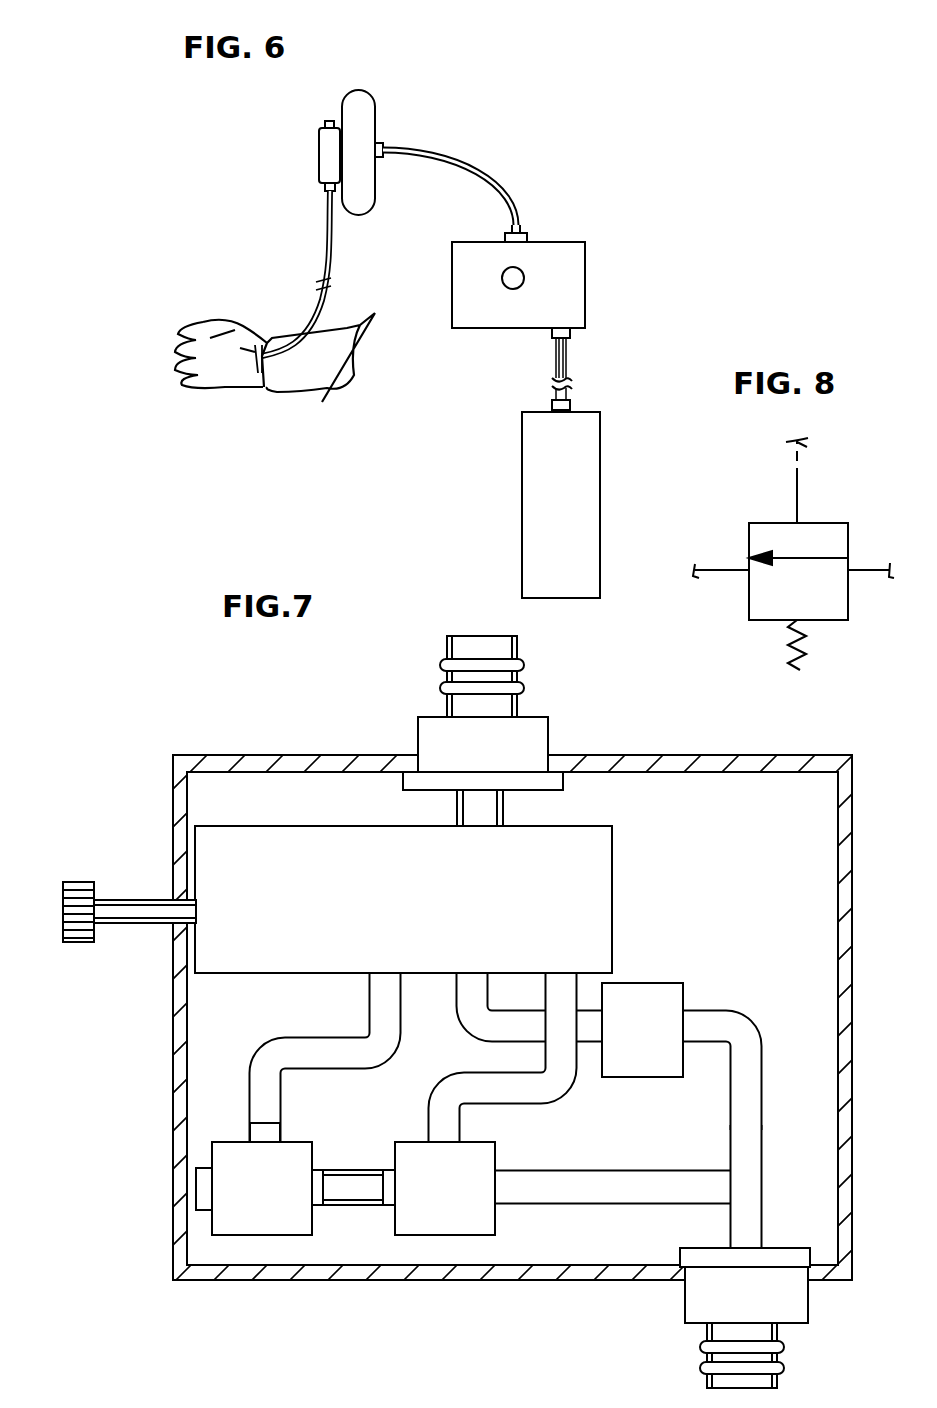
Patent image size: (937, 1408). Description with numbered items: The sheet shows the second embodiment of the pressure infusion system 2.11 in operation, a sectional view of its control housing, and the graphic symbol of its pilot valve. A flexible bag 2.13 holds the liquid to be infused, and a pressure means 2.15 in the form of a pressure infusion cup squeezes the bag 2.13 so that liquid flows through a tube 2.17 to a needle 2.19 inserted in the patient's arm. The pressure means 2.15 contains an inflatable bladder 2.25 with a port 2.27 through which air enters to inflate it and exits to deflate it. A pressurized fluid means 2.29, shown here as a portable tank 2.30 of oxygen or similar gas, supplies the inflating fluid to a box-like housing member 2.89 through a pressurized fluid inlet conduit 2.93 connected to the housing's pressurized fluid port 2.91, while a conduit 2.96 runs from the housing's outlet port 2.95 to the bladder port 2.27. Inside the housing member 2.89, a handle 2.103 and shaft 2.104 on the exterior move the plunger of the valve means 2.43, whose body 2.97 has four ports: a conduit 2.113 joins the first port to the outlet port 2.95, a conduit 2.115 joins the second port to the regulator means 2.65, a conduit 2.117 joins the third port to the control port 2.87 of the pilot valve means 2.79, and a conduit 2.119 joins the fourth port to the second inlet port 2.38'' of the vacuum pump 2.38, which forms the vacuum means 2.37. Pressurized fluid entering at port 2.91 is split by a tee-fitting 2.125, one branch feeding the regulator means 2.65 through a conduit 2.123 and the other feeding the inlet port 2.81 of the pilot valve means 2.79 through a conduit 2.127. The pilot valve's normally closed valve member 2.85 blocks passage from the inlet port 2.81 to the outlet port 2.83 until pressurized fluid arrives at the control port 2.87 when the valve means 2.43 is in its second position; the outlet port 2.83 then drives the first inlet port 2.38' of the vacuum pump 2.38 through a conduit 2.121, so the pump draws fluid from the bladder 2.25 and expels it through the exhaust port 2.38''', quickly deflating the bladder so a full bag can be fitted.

In FIG. 6, the pressure infusion system 2.11 is at (398, 425).
In FIG. 6, the flexible bag 2.13 is at (333, 123).
In FIG. 6, the pressure means 2.15 is at (363, 185).
In FIG. 6, the tube 2.17 is at (313, 310).
In FIG. 6, the needle 2.19 is at (250, 358).
In FIG. 6, the inflatable bladder 2.25 is at (392, 58).
In FIG. 6, the port 2.27 is at (381, 143).
In FIG. 6, the pressurized fluid means 2.29 is at (488, 490).
In FIG. 6, the vacuum reservoir 2.30 is at (535, 549).
In FIG. 6, the conduit 2.96 is at (468, 165).
In FIG. 6, the outlet port 2.95 is at (527, 235).
In FIG. 7, the outlet port 2.95 is at (425, 724).
In FIG. 6, the housing member 2.89 is at (570, 265).
In FIG. 7, the housing member 2.89 is at (175, 1002).
In FIG. 6, the pressurized fluid port 2.91 is at (570, 336).
In FIG. 7, the pressurized fluid port 2.91 is at (712, 1305).
In FIG. 6, the pressurized fluid inlet conduit 2.93 is at (566, 395).
In FIG. 6, the handle 2.103 is at (512, 290).
In FIG. 7, the handle 2.103 is at (80, 882).
In FIG. 7, the shaft 2.104 is at (140, 920).
In FIG. 7, the body 2.97 is at (238, 840).
In FIG. 7, the valve means 2.43 is at (345, 840).
In FIG. 7, the conduit 2.113 is at (505, 808).
In FIG. 7, the conduit 2.115 is at (590, 1025).
In FIG. 7, the conduit 2.117 is at (438, 1092).
In FIG. 7, the conduit 2.119 is at (314, 1050).
In FIG. 7, the regulator means 2.65 is at (645, 1000).
In FIG. 7, the conduit 2.123 is at (772, 992).
In FIG. 7, the tee-fitting 2.125 is at (760, 1192).
In FIG. 7, the conduit 2.127 is at (625, 1190).
In FIG. 7, the vacuum pump 2.38 is at (238, 1243).
In FIG. 7, the first inlet port 2.38' is at (337, 1257).
In FIG. 7, the second inlet port 2.38'' is at (190, 1107).
In FIG. 7, the exhaust port 2.38''' is at (137, 1200).
In FIG. 7, the vacuum means 2.37 is at (200, 1260).
In FIG. 7, the pilot valve means 2.79 is at (438, 1245).
In FIG. 8, the inlet port 2.81 is at (870, 575).
In FIG. 7, the inlet port 2.81 is at (502, 1240).
In FIG. 8, the outlet port 2.83 is at (718, 570).
In FIG. 7, the outlet port 2.83 is at (385, 1240).
In FIG. 8, the normally closed valve member 2.85 is at (820, 530).
In FIG. 8, the control port 2.87 is at (798, 484).
In FIG. 7, the control port 2.87 is at (475, 1137).
In FIG. 7, the conduit 2.121 is at (357, 1240).